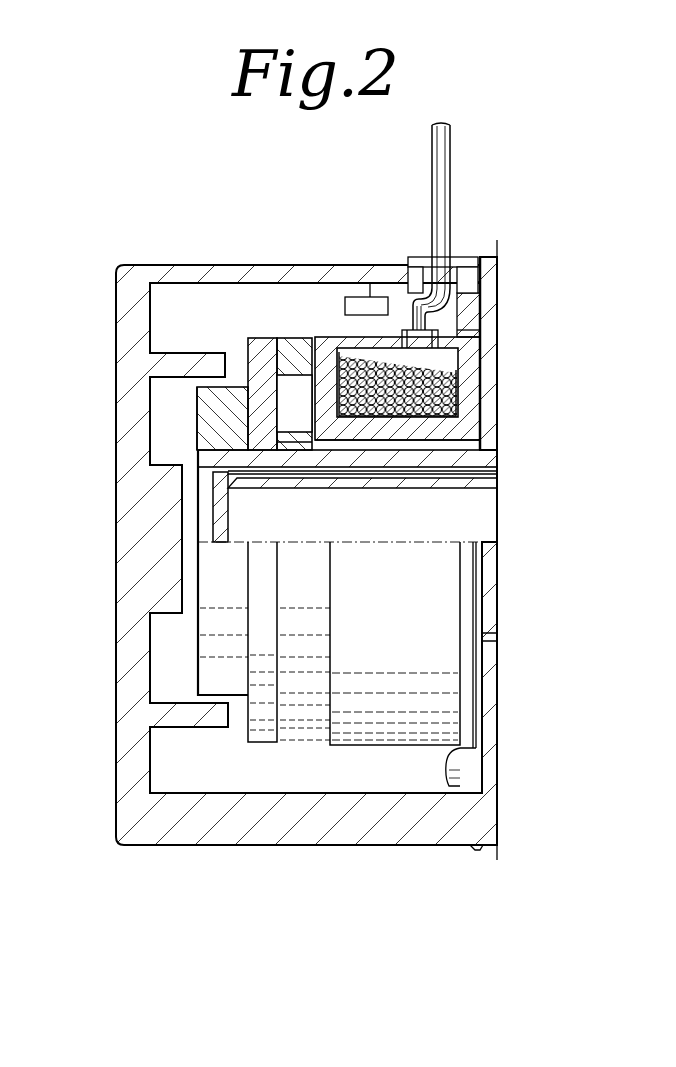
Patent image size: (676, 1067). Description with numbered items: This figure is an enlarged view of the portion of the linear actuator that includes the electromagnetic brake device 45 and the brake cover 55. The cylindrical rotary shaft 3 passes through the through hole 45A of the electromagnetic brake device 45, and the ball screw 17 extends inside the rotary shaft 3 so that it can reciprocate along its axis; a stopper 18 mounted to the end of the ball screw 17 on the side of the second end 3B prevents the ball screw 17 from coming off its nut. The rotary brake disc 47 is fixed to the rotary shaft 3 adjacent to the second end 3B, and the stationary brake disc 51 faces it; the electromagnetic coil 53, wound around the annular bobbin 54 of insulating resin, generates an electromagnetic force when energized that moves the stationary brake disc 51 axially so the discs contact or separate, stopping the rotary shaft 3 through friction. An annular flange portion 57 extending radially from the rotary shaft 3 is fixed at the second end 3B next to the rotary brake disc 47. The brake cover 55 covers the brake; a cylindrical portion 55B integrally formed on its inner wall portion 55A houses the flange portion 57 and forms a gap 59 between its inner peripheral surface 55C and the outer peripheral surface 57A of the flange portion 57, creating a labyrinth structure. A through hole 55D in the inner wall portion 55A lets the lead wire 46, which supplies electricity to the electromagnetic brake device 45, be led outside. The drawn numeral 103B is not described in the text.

The brake cover 55 is at (132, 277).
The inner wall portion 55A is at (163, 648).
The cylindrical portion 55B is at (183, 347).
The inner peripheral surface 55C is at (180, 388).
The through hole 55D is at (449, 277).
The annular flange portion 57 is at (223, 412).
The outer peripheral surface 57A is at (196, 380).
The gap 59 is at (216, 377).
The rotary brake disc 47 is at (258, 337).
The stationary brake disc 51 is at (289, 336).
The electromagnetic brake device 45 is at (436, 319).
The through hole 45A is at (398, 437).
The electromagnetic coil 53 is at (389, 368).
The annular bobbin 54 is at (462, 410).
The lead wire 46 is at (450, 155).
The rotary shaft 3 is at (477, 458).
The second end 3B is at (203, 457).
The stopper 18 is at (207, 512).
The ball screw 17 is at (393, 488).
The rotor 103B is at (247, 458).